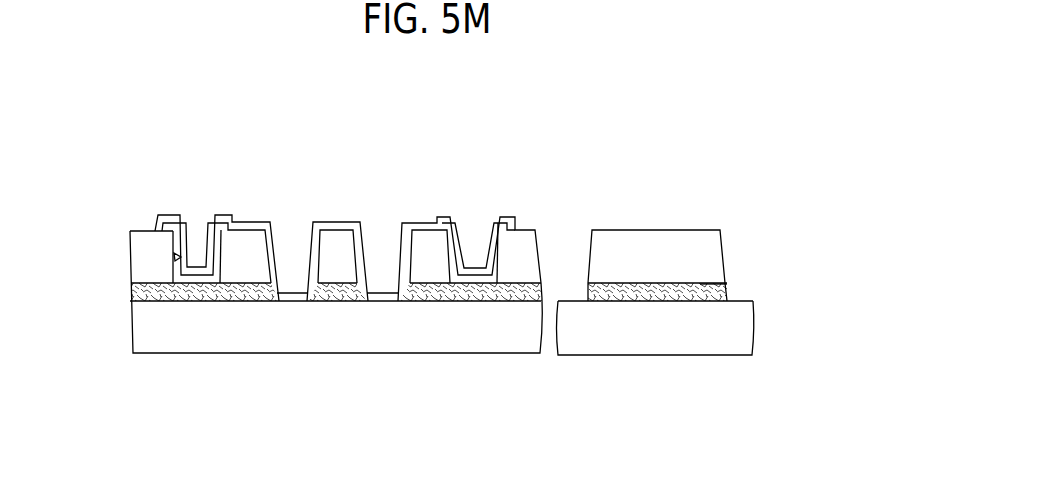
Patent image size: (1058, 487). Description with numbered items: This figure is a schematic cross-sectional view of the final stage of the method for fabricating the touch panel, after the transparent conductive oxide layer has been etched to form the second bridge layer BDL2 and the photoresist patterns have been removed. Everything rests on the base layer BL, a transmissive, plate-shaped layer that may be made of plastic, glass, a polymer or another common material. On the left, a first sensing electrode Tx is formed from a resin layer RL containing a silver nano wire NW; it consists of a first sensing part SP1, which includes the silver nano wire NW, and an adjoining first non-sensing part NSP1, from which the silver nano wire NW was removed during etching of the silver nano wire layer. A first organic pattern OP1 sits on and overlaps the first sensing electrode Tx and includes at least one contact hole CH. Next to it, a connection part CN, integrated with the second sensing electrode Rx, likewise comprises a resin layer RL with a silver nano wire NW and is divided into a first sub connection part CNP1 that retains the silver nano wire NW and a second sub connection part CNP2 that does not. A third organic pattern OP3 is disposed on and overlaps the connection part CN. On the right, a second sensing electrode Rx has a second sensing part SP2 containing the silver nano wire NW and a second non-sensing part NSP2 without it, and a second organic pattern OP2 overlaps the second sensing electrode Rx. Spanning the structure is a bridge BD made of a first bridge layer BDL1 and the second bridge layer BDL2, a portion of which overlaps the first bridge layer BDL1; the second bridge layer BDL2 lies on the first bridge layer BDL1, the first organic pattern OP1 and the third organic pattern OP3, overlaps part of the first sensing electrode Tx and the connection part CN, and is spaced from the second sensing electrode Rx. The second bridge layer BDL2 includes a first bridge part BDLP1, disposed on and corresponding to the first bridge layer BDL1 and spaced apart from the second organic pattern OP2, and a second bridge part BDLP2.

The base layer BL is at (140, 328).
The resin layer RL is at (725, 299).
The silver nano wire NW is at (718, 292).
The first sensing electrode Tx is at (184, 304).
The first sensing part SP1 is at (203, 301).
The first non-sensing part NSP1 is at (257, 301).
The first organic pattern OP1 is at (245, 238).
The contact hole CH is at (178, 256).
The connection part CN is at (338, 304).
The third organic pattern OP3 is at (335, 238).
The second sub connection part CNP2 is at (315, 301).
The first sub connection part CNP1 is at (338, 301).
The bridge BD is at (457, 194).
The first bridge layer BDL1 is at (499, 217).
The second bridge layer BDL2 is at (444, 204).
The second bridge part BDLP2 is at (418, 222).
The first bridge part BDLP1 is at (469, 223).
The second sensing electrode Rx is at (647, 305).
The second organic pattern OP2 is at (656, 240).
The second non-sensing part NSP2 is at (588, 283).
The second sensing part SP2 is at (652, 283).